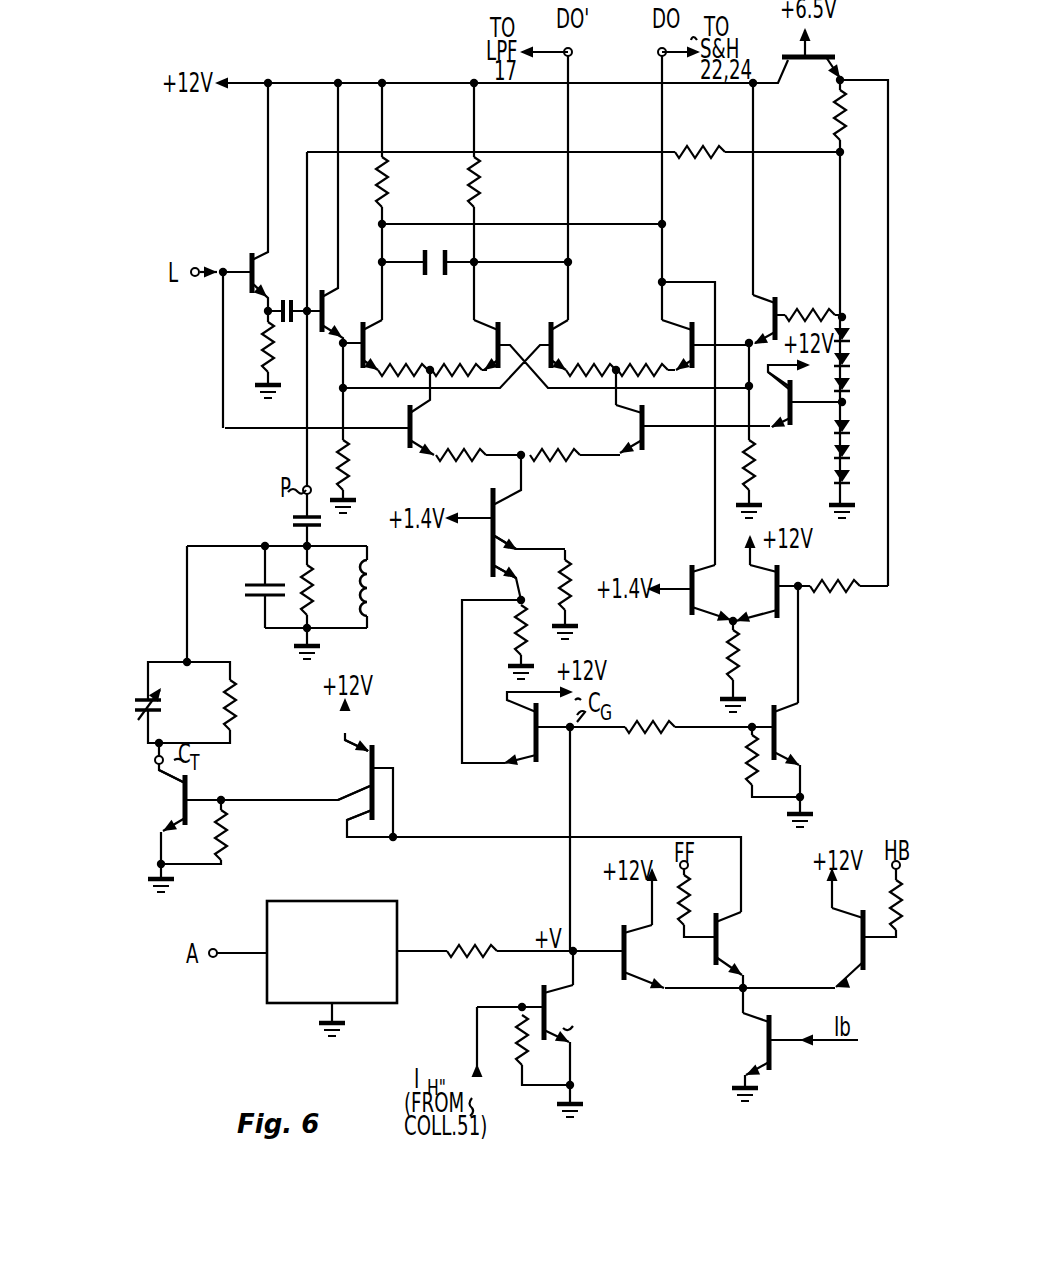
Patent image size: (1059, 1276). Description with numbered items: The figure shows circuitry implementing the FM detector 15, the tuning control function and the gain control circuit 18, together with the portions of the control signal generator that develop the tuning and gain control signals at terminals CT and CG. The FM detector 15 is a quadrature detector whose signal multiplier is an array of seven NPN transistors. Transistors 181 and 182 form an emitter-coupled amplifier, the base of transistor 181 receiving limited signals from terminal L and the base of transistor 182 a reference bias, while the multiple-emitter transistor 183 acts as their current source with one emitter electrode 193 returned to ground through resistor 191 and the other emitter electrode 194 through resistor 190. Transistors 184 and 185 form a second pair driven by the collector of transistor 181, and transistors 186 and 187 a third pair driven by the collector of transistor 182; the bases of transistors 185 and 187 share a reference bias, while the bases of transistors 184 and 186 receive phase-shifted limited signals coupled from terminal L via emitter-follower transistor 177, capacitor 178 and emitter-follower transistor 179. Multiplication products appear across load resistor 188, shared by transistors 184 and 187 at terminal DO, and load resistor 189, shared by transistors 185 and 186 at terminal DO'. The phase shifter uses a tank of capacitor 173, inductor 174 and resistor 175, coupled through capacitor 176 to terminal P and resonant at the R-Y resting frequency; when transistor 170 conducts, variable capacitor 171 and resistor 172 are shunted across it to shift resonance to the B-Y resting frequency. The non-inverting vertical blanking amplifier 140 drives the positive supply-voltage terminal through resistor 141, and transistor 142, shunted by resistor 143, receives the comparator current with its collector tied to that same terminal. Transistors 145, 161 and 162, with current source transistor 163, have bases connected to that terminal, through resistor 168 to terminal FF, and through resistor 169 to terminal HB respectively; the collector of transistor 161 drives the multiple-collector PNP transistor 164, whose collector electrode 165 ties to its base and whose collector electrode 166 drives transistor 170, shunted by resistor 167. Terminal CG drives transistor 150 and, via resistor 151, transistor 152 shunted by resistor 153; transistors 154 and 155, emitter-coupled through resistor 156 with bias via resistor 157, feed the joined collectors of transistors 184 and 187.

The FM detector 15 is at (548, 216).
The gain control circuit 18 is at (661, 688).
The non-inverting vertical blanking amplifier 140 is at (397, 912).
The resistor 141 is at (476, 940).
The grounded-emitter NPN transistor 142 is at (542, 989).
The resistor 143 is at (520, 1052).
The NPN transistor 145 is at (618, 936).
The NPN transistor 150 is at (538, 762).
The resistor 151 is at (667, 740).
The grounded-emitter NPN transistor 152 is at (778, 707).
The resistor 153 is at (748, 770).
The NPN transistor 154 is at (790, 568).
The NPN transistor 155 is at (686, 568).
The resistor 156 is at (740, 652).
The resistor 157 is at (828, 590).
The NPN transistor 161 is at (710, 960).
The NPN transistor 162 is at (866, 962).
The NPN transistor 163 is at (772, 1060).
The multiple-collector PNP transistor 164 is at (375, 751).
The collector electrode 165 is at (340, 820).
The collector electrode 166 is at (354, 791).
The resistor 167 is at (228, 834).
The resistor 168 is at (690, 887).
The resistor 169 is at (888, 889).
The grounded-emitter NPN transistor 170 is at (190, 782).
The variable capacitor 171 is at (160, 705).
The resistor 172 is at (236, 705).
The capacitor 173 is at (245, 590).
The inductor 174 is at (372, 590).
The resistor 175 is at (314, 592).
The capacitor 176 is at (292, 521).
The emitter-follower transistor 177 is at (253, 258).
The capacitor 178 is at (287, 296).
The emitter-follower transistor 179 is at (322, 284).
The NPN transistor 181 is at (408, 446).
The NPN transistor 182 is at (645, 410).
The multiple-emitter transistor 183 is at (490, 500).
The NPN transistor 184 is at (366, 322).
The NPN transistor 185 is at (500, 318).
The NPN transistor 186 is at (553, 318).
The NPN transistor 187 is at (694, 318).
The load resistor 188 is at (388, 182).
The load resistor 189 is at (480, 182).
The resistor 190 is at (572, 612).
The resistor 191 is at (514, 639).
The emitter electrode 193 is at (510, 571).
The emitter electrode 194 is at (512, 546).